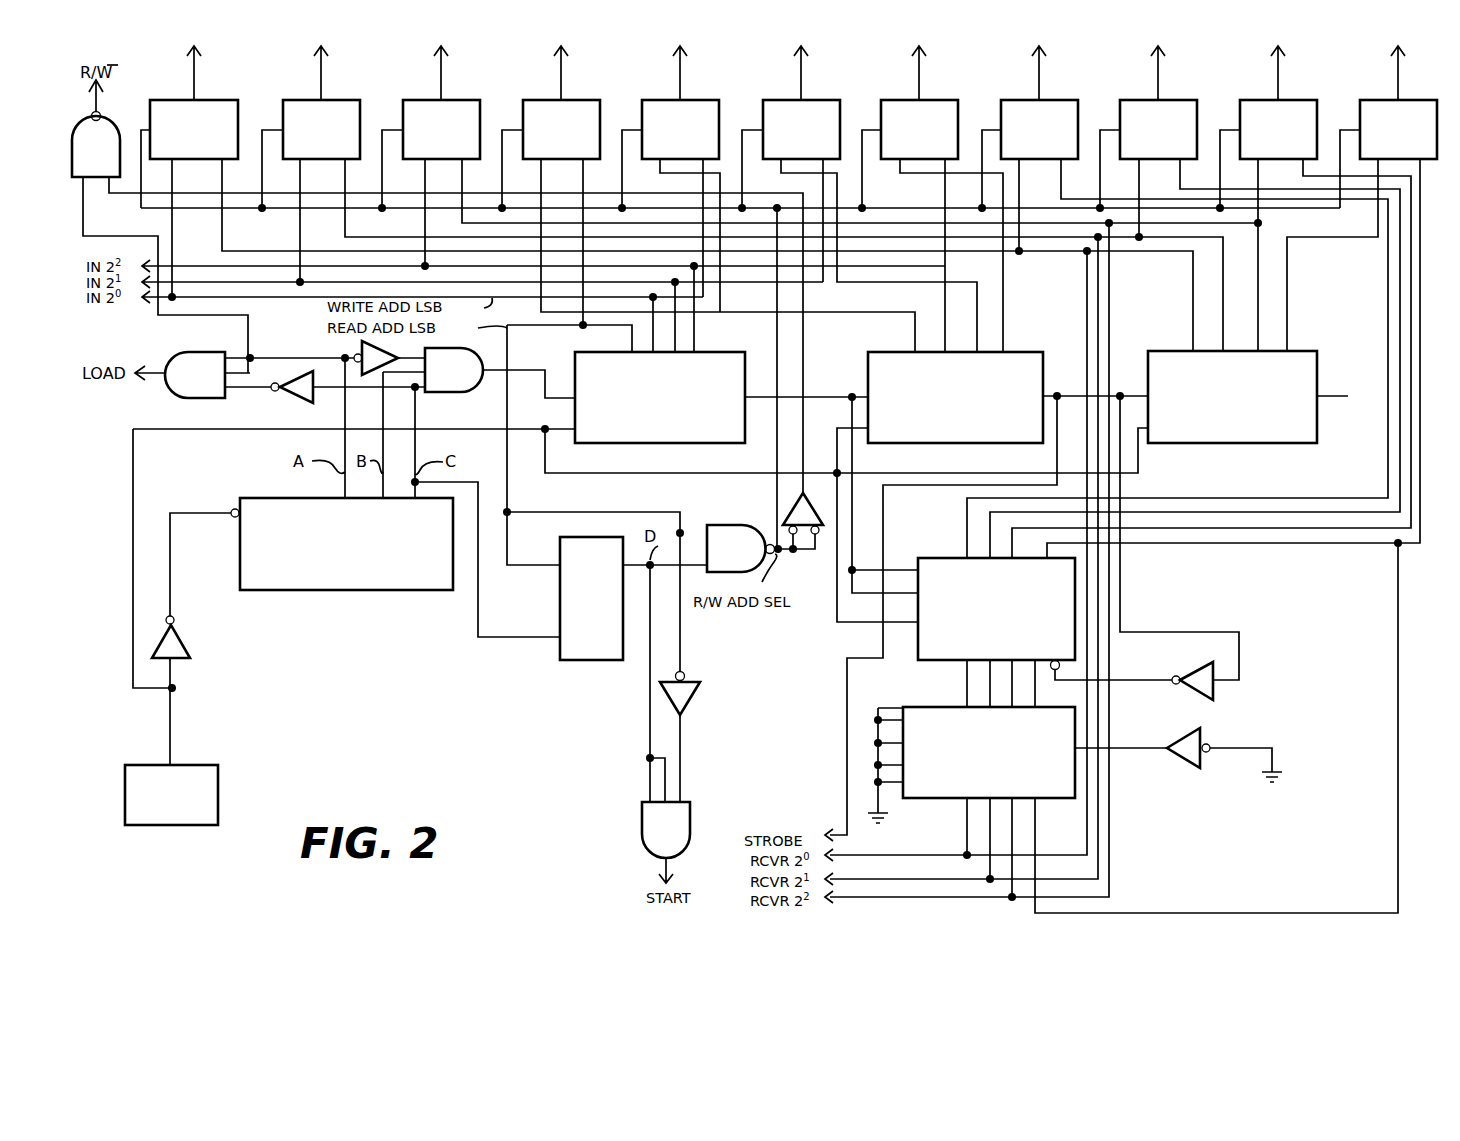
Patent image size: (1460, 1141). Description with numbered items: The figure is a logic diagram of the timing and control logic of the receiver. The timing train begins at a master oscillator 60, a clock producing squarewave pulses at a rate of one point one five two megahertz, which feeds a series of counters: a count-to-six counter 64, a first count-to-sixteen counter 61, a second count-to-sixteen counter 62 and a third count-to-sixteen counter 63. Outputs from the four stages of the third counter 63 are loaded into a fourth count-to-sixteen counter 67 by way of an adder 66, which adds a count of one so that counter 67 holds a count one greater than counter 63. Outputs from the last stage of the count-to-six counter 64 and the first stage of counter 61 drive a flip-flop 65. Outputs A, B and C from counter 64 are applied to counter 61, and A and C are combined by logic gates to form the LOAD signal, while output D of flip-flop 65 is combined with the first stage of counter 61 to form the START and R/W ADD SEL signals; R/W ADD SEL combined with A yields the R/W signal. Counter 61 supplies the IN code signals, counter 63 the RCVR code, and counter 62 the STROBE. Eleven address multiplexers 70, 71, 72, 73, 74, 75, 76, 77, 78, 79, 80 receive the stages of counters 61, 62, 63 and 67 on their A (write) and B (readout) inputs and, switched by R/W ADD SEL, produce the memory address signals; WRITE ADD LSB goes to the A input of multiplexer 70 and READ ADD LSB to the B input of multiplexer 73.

The master oscillator 60 is at (218, 792).
The first count-to-16 counter 61 is at (717, 352).
The second count-to-16 counter 62 is at (1030, 352).
The third count-to-16 counter 63 is at (1318, 351).
The count-to-6 counter 64 is at (355, 590).
The flip-flop 65 is at (556, 656).
The adder 66 is at (940, 798).
The fourth count-to-16 counter 67 is at (928, 660).
The first address multiplexer 70 is at (218, 84).
The address multiplexer 71 is at (342, 100).
The address multiplexer 72 is at (462, 100).
The fourth address multiplexer 73 is at (582, 100).
The address multiplexer 74 is at (701, 100).
The address multiplexer 75 is at (822, 100).
The address multiplexer 76 is at (940, 100).
The address multiplexer 77 is at (1060, 100).
The address multiplexer 78 is at (1179, 100).
The address multiplexer 79 is at (1299, 100).
The address multiplexer 80 is at (1419, 100).